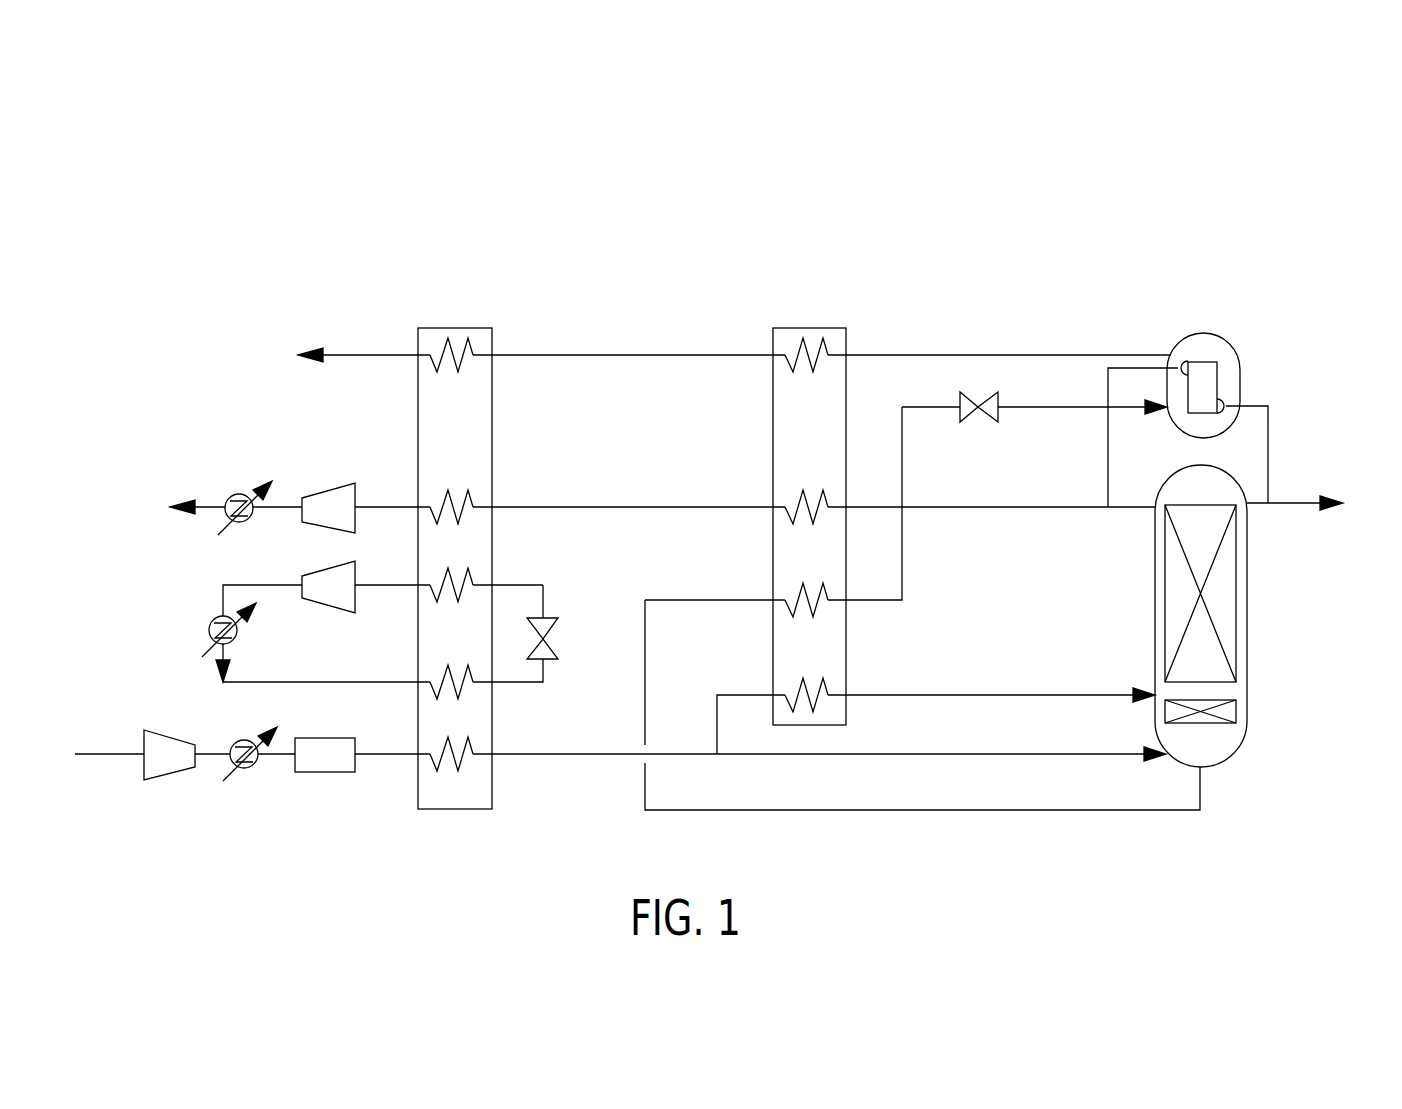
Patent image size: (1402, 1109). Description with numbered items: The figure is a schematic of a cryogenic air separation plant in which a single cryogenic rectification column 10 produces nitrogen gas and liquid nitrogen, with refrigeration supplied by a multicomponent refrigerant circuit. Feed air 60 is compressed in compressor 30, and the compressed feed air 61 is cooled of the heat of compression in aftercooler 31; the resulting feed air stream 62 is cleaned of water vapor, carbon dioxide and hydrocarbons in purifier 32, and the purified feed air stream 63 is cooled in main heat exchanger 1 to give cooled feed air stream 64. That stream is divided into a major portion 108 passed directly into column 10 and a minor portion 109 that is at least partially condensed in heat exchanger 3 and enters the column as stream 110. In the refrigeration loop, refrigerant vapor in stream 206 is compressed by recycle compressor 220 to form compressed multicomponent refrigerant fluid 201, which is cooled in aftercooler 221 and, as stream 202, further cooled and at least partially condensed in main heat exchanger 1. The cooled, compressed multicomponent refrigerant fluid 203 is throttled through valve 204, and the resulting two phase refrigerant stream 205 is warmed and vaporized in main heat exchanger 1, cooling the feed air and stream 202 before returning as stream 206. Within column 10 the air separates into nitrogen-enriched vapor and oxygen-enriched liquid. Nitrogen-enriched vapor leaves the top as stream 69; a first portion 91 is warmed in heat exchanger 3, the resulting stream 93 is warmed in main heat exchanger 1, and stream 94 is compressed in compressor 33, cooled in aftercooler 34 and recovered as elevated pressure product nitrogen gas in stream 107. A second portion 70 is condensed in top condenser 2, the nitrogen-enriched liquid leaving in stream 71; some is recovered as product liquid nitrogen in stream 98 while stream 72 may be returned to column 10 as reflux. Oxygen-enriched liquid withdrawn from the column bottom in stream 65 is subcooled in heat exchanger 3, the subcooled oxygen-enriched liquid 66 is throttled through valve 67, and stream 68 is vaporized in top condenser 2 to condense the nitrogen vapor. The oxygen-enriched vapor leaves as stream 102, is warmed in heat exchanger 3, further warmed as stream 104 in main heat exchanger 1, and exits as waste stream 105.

The main heat exchanger 1 is at (452, 328).
The top condenser 2 is at (1232, 342).
The heat exchanger 3 is at (808, 328).
The cryogenic rectification column 10 is at (1250, 680).
The compressor 30 is at (170, 772).
The aftercooler 31 is at (235, 742).
The purifier 32 is at (320, 738).
The compressor 33 is at (322, 483).
The aftercooler 34 is at (239, 492).
The feed air 60 is at (100, 760).
The compressed feed air 61 is at (205, 760).
The feed air stream 62 is at (280, 760).
The purified feed air stream 63 is at (385, 760).
The cooled feed air stream 64 is at (553, 760).
The stream 65 is at (930, 812).
The subcooled oxygen-enriched liquid 66 is at (903, 528).
The valve 67 is at (977, 423).
The stream 68 is at (1022, 407).
The stream 69 is at (1128, 515).
The second portion 70 is at (1108, 467).
The stream 71 is at (1275, 408).
The stream 72 is at (1256, 510).
The first portion 91 is at (1015, 515).
The stream 93 is at (622, 507).
The stream 94 is at (376, 507).
The stream 98 is at (1298, 503).
The stream 102 is at (983, 355).
The stream 104 is at (628, 355).
The waste stream 105 is at (348, 355).
The stream 107 is at (208, 507).
The major portion 108 is at (950, 753).
The minor portion 109 is at (740, 695).
The stream 110 is at (905, 695).
The compressed multicomponent refrigerant fluid 201 is at (222, 583).
The stream 202 is at (275, 682).
The cooled, compressed multicomponent refrigerant fluid 203 is at (545, 685).
The valve 204 is at (560, 640).
The refrigeration bearing multicomponent two phase refrigerant fluid stream 205 is at (545, 582).
The stream 206 is at (378, 590).
The recycle compressor 220 is at (300, 572).
The aftercooler 221 is at (206, 630).